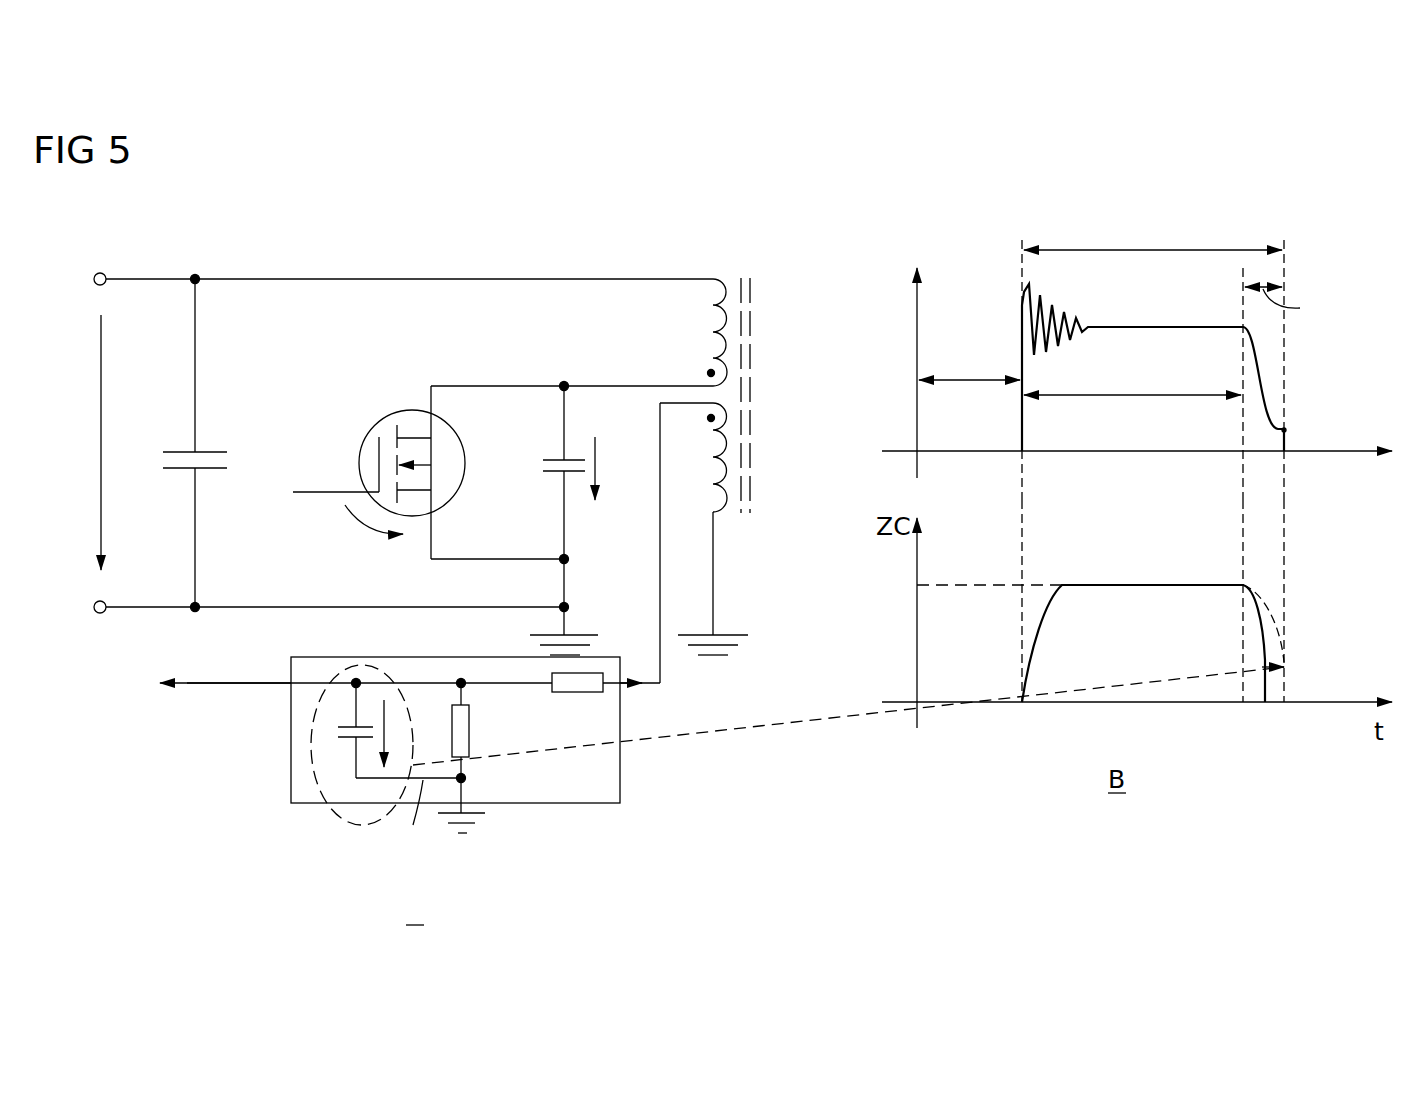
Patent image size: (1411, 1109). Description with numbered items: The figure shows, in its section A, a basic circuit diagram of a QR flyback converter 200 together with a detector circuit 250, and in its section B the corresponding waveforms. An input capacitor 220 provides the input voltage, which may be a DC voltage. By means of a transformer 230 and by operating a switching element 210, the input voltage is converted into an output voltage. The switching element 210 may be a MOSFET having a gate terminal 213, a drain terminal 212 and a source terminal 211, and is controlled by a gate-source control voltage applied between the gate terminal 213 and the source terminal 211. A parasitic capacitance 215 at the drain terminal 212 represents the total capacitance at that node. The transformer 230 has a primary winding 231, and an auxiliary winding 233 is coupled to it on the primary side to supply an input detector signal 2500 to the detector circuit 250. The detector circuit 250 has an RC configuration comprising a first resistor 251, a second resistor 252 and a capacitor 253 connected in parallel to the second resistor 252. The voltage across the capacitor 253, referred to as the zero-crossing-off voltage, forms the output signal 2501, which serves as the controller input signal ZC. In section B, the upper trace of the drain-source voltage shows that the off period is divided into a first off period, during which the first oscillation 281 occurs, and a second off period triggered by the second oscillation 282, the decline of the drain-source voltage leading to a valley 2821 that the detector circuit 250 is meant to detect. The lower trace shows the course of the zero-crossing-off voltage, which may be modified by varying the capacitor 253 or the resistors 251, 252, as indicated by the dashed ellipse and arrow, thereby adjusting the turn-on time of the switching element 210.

The QR flyback converter 200 is at (230, 240).
The switching element 210 is at (343, 519).
The source terminal 211 is at (434, 557).
The drain terminal 212 is at (430, 383).
The gate terminal 213 is at (318, 488).
The parasitic capacitance 215 is at (537, 438).
The input capacitor 220 is at (218, 440).
The transformer 230 is at (776, 381).
The primary winding 231 is at (694, 332).
The auxiliary winding 233 is at (697, 495).
The detector circuit 250 is at (698, 791).
The first resistor 251 is at (585, 693).
The second resistor 252 is at (472, 717).
The capacitor 253 is at (348, 745).
The input detector signal 2500 is at (648, 686).
The output signal 2501 is at (215, 687).
The first oscillation 281 is at (1061, 280).
The second oscillation 282 is at (1313, 232).
The valley 2821 is at (1286, 430).